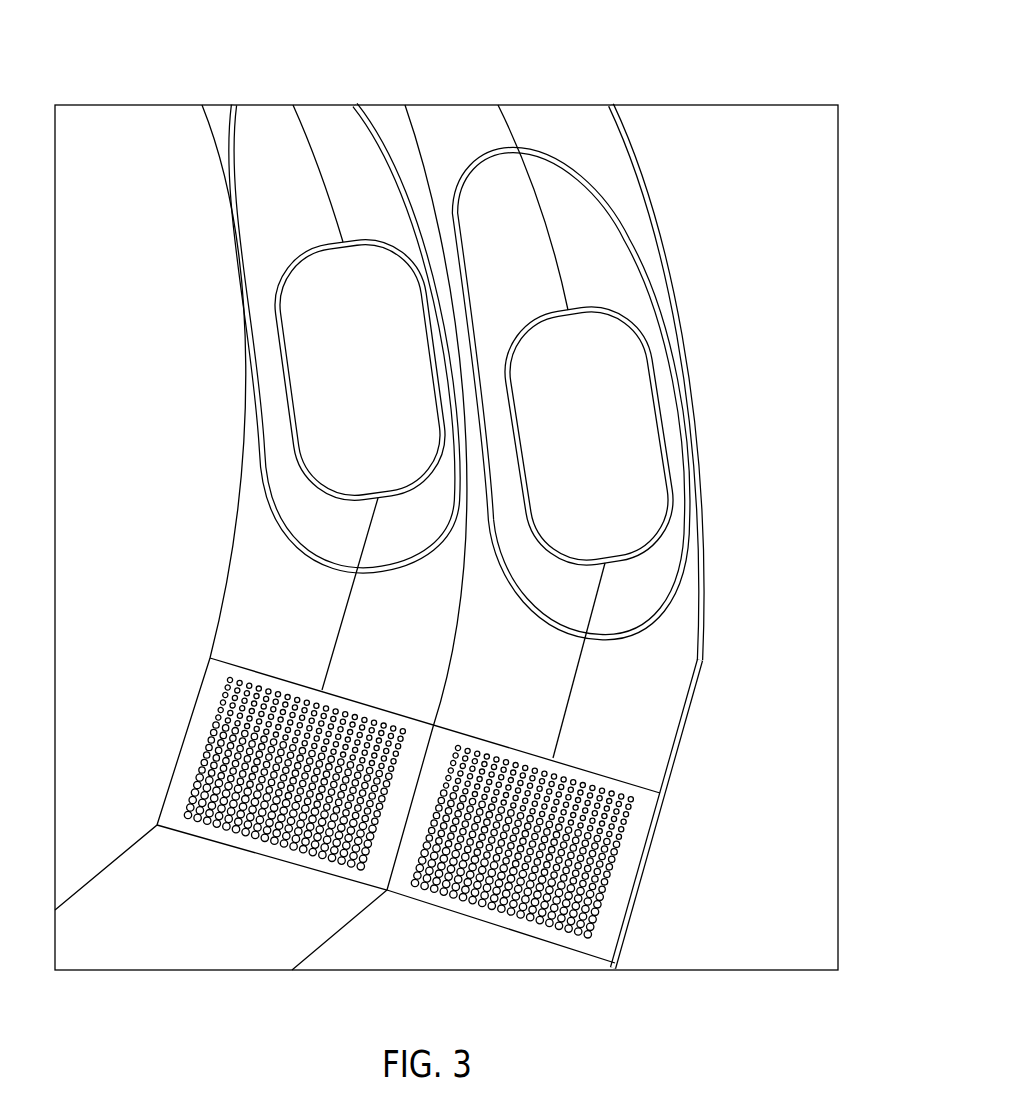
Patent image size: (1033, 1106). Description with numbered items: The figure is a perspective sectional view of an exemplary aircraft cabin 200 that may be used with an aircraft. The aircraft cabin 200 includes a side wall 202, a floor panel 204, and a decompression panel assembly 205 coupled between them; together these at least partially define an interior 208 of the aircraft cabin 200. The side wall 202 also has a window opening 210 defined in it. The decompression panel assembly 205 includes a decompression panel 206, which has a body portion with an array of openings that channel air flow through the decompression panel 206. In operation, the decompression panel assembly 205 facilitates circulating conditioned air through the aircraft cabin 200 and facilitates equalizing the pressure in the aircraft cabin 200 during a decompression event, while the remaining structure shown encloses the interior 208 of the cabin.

The aircraft cabin 200 is at (370, 57).
The side wall 202 is at (610, 160).
The floor panel 204 is at (360, 943).
The decompression panel assembly 205 is at (662, 913).
The decompression panel 206 is at (635, 838).
The interior 208 is at (168, 464).
The window opening 210 is at (611, 448).